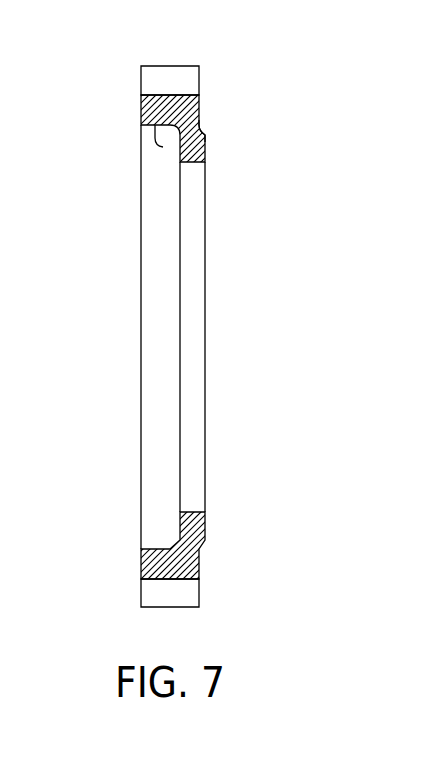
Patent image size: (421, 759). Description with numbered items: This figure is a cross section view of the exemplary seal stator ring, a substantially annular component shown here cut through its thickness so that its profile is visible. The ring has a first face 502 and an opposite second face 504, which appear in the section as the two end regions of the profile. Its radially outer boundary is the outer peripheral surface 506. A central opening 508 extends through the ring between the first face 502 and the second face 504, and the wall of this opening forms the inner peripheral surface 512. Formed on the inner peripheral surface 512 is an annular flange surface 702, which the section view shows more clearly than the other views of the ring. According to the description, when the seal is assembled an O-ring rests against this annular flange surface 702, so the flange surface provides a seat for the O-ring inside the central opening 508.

The first face 502 is at (142, 112).
The second face 504 is at (205, 523).
The outer peripheral surface 506 is at (197, 66).
The central opening 508 is at (148, 318).
The inner peripheral surface 512 is at (152, 145).
The annular flange surface 702 is at (205, 130).